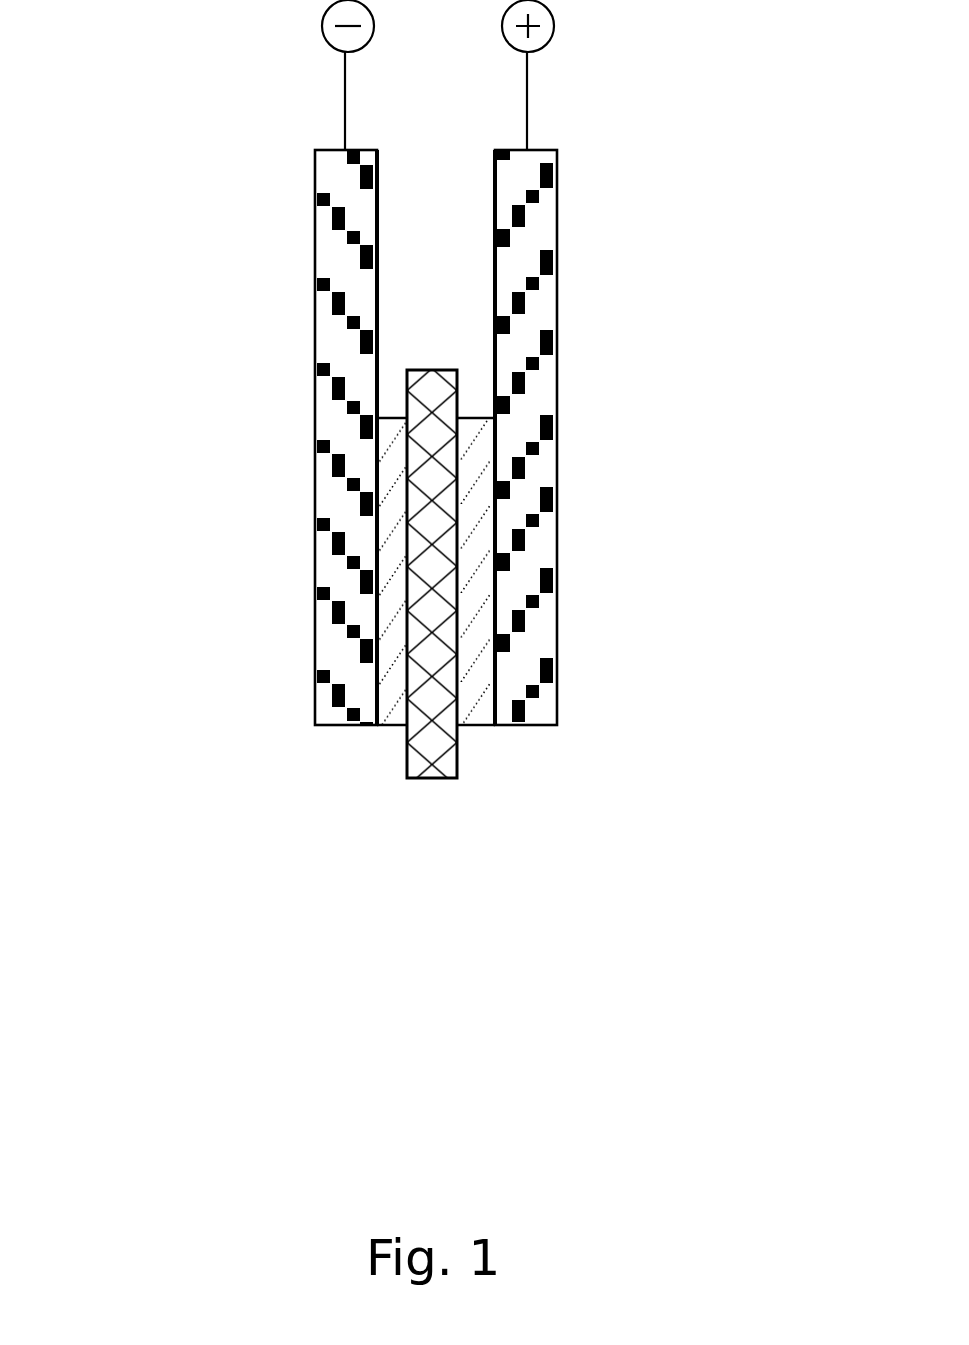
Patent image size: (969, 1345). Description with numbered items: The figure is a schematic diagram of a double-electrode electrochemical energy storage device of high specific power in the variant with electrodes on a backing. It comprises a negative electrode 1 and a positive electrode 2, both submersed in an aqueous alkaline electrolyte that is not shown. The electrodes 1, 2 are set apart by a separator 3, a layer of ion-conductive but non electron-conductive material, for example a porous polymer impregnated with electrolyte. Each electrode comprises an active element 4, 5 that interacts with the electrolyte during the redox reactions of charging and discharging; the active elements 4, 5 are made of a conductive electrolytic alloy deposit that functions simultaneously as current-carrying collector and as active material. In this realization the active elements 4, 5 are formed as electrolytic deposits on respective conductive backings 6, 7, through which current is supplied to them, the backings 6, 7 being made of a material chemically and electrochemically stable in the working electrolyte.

The negative electrode 1 is at (315, 725).
The positive electrode 2 is at (548, 725).
The separator 3 is at (437, 595).
The active element 4 is at (392, 698).
The active element 5 is at (475, 698).
The conductive backing 6 is at (342, 353).
The conductive backing 7 is at (521, 342).